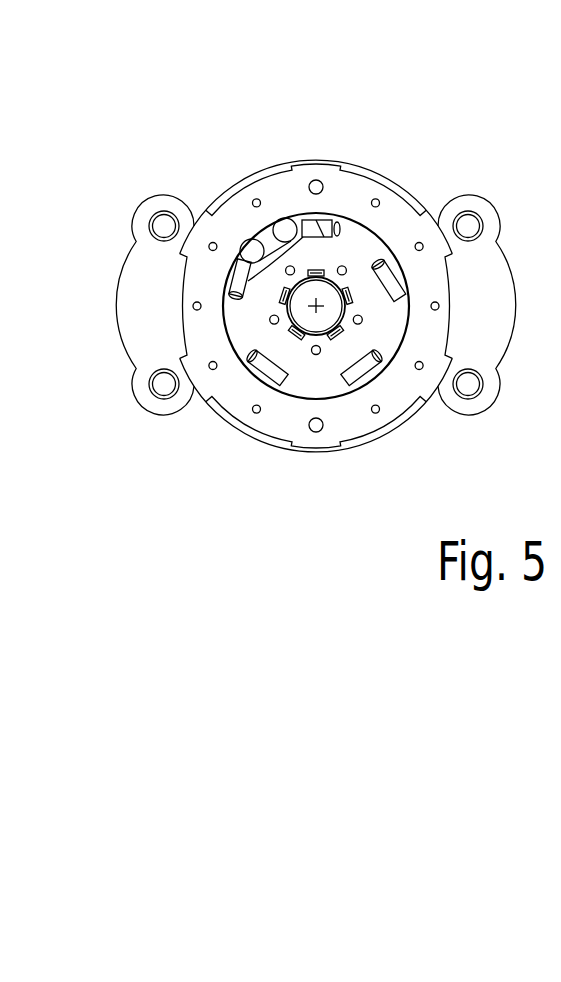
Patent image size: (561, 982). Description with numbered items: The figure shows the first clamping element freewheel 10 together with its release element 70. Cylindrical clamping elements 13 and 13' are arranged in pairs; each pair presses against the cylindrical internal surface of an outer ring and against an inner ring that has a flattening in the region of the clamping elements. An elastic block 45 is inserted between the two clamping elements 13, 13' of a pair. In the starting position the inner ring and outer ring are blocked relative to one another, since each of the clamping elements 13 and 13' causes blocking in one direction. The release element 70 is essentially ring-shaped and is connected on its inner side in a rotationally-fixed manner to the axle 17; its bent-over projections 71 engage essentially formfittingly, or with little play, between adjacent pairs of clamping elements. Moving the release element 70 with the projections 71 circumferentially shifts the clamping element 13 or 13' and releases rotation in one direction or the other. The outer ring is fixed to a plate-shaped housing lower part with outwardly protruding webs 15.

The first clamping element freewheel 10 is at (415, 143).
The webs 15 is at (165, 303).
The release element 70 is at (367, 300).
The axle 17 is at (316, 306).
The projections 71 is at (325, 221).
The clamping element 13 is at (181, 232).
The elastic block 45 is at (251, 249).
The clamping element 13' is at (267, 153).